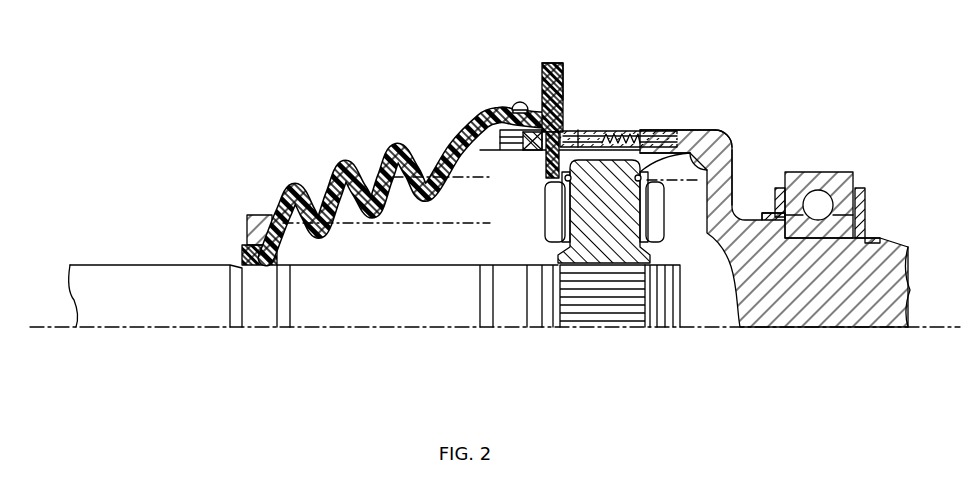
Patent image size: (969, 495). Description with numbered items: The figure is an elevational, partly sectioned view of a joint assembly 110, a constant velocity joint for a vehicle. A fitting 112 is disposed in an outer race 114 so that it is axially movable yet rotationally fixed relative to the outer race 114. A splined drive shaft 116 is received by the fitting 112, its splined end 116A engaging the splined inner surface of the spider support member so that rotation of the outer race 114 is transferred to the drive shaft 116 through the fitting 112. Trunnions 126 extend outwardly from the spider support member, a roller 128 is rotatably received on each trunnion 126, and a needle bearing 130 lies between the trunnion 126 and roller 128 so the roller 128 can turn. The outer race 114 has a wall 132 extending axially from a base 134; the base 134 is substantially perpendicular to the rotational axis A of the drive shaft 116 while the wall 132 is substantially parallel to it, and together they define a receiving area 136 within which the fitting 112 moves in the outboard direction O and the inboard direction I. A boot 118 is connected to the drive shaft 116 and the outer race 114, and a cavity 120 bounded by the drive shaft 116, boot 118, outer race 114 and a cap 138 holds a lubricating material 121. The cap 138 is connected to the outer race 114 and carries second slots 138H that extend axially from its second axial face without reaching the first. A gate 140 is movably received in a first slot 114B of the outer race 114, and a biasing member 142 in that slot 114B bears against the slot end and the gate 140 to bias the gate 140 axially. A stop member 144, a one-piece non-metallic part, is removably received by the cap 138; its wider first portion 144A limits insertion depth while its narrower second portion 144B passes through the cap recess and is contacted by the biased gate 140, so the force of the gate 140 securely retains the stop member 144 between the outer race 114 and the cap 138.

The joint assembly 110 is at (278, 374).
The fitting 112 is at (660, 254).
The outer race 114 is at (700, 124).
The first slot 114B is at (578, 130).
The drive shaft 116 is at (139, 264).
The splined end 116A is at (596, 308).
The boot 118 is at (343, 160).
The cavity 120 is at (463, 200).
The lubricating material 121 is at (420, 224).
The trunnion 126 is at (670, 135).
The roller 128 is at (710, 238).
The needle bearing 130 is at (722, 135).
The wall 132 is at (606, 130).
The base 134 is at (733, 195).
The receiving area 136 is at (683, 208).
The cap 138 is at (525, 155).
The second slot 138H is at (500, 146).
The gate 140 is at (568, 130).
The biasing member 142 is at (622, 133).
The stop member 144 is at (545, 64).
The first portion 144A is at (540, 75).
The second portion 144B is at (552, 170).
The rotational axis A is at (44, 328).
The outboard direction O is at (580, 347).
The inboard direction I is at (623, 347).